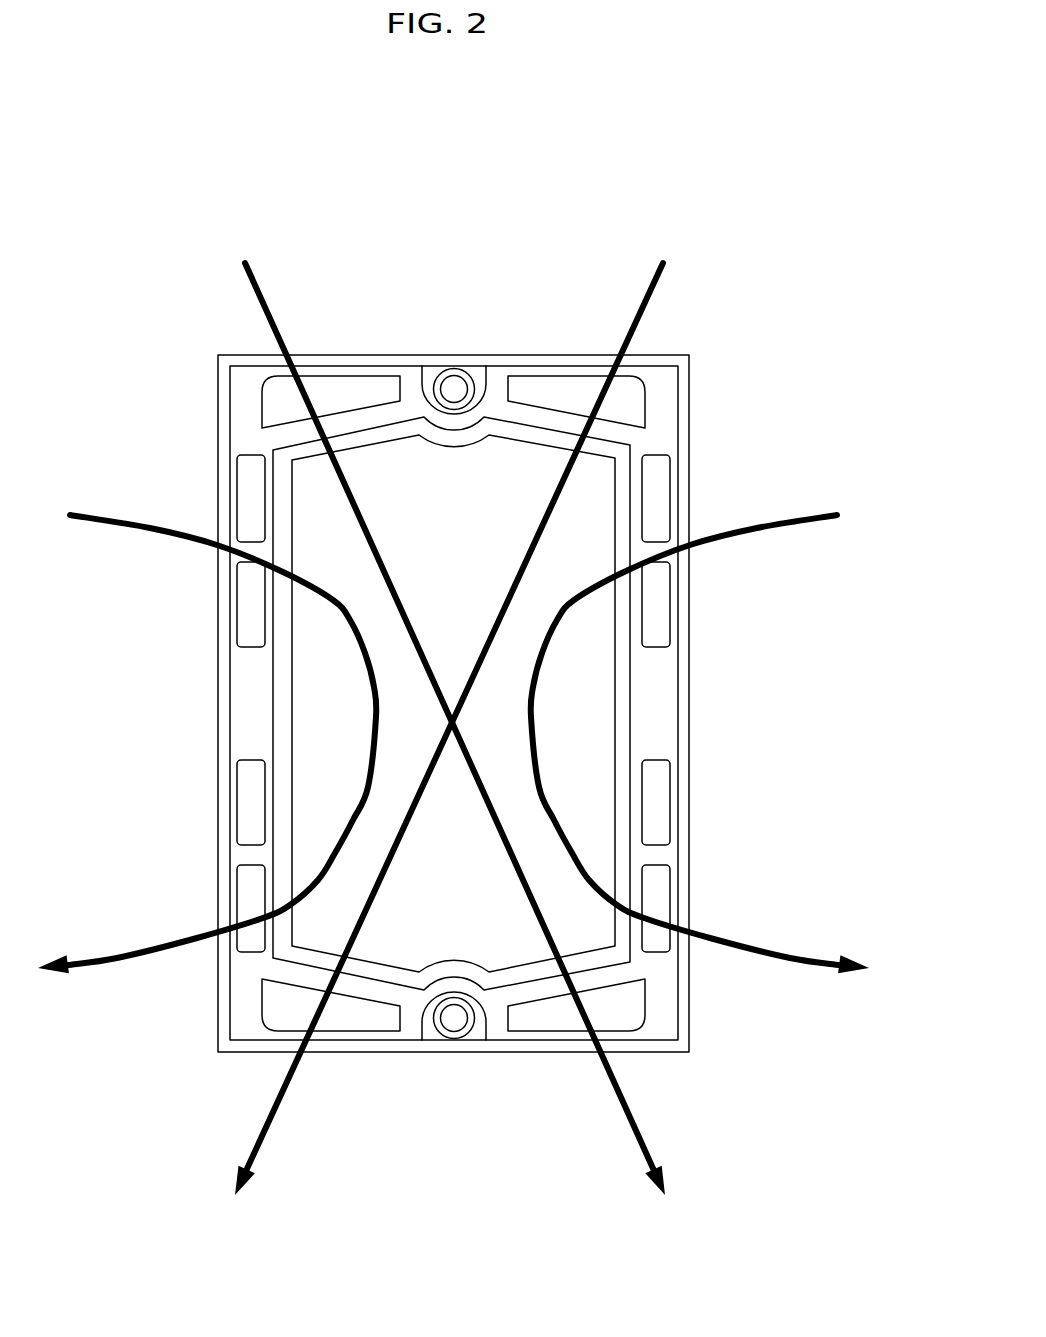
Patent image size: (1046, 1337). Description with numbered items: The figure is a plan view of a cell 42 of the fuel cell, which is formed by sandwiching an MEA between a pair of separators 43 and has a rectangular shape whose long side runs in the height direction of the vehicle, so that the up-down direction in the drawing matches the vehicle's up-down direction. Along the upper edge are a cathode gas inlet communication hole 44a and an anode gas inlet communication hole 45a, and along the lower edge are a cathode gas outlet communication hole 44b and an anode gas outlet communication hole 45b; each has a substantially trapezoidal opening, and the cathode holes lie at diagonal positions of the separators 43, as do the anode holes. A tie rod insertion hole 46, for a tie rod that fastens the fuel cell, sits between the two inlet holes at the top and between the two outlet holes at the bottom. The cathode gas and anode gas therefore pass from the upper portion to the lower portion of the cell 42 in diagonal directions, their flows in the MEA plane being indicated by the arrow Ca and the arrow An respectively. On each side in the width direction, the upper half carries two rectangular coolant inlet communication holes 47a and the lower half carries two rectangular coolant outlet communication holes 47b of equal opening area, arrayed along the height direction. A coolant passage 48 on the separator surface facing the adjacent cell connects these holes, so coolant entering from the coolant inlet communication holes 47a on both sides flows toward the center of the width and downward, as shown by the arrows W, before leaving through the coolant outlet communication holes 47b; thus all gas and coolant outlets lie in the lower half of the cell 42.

The cell 42 is at (772, 188).
The separator 43 is at (715, 346).
The cathode gas inlet communication hole 44a is at (352, 376).
The cathode gas outlet communication hole 44b is at (553, 1031).
The anode gas inlet communication hole 45a is at (557, 376).
The anode gas outlet communication hole 45b is at (351, 1031).
The tie rod insertion hole 46 is at (463, 386).
The coolant inlet communication hole 47a is at (243, 491).
The coolant outlet communication hole 47b is at (243, 785).
The coolant passage 48 is at (586, 498).
The arrow Ca is at (258, 278).
The arrow An is at (656, 291).
The arrows W is at (89, 513).